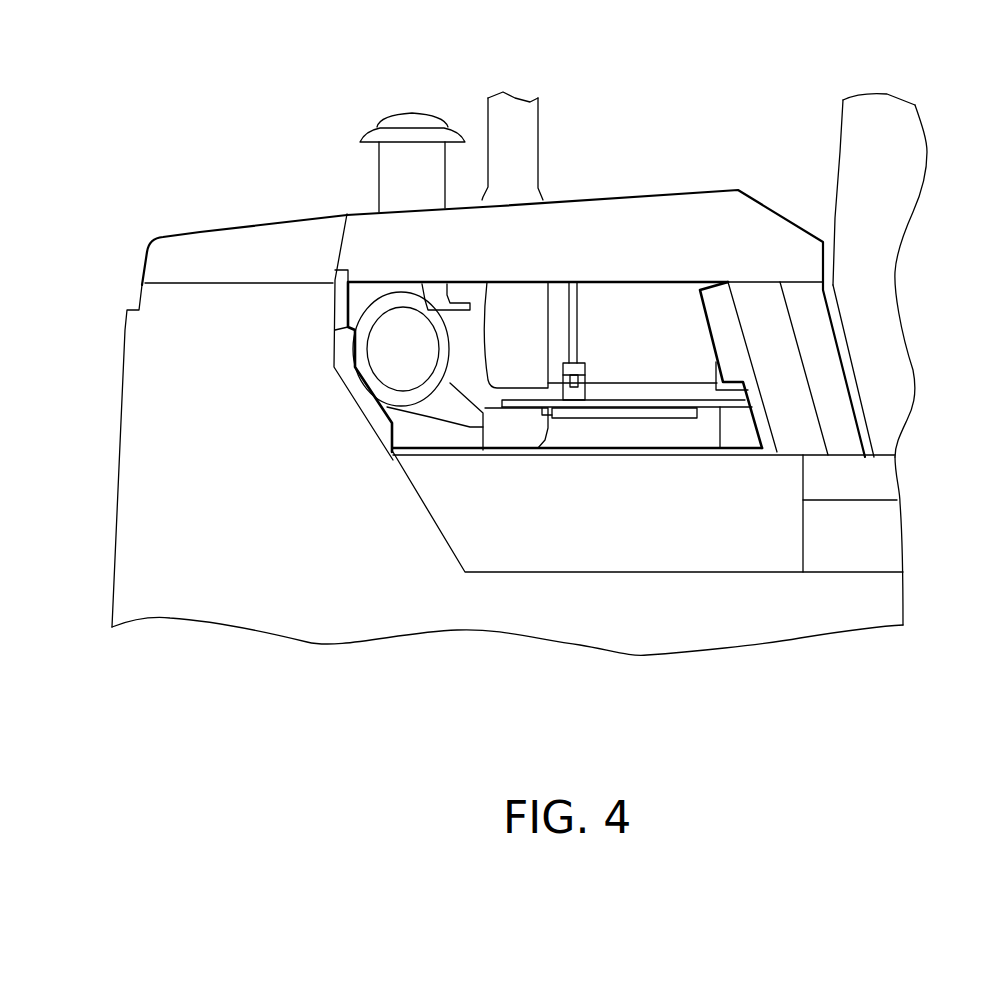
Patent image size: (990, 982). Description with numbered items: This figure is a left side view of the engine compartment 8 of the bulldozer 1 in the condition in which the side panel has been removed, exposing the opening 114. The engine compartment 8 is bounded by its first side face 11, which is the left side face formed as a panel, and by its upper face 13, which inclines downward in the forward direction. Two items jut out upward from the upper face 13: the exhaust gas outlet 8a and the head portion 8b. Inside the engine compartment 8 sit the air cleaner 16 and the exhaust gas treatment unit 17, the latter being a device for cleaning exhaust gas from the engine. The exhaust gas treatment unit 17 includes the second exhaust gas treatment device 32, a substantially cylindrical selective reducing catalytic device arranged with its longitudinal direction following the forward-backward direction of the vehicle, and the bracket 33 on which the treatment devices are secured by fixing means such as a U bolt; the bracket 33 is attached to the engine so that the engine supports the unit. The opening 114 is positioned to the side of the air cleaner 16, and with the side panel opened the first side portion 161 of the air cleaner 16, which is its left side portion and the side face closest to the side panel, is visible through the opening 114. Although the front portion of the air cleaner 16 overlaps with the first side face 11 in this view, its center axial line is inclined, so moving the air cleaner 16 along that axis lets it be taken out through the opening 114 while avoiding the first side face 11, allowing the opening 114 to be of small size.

The bulldozer 1 is at (787, 370).
The engine compartment 8 is at (733, 177).
The exhaust gas outlet 8a is at (527, 127).
The head portion 8b is at (387, 158).
The first side face 11 is at (262, 348).
The upper face 13 is at (655, 192).
The air cleaner 16 is at (380, 337).
The exhaust gas treatment unit 17 is at (672, 310).
The second exhaust gas treatment device 32 is at (698, 343).
The bracket 33 is at (625, 403).
The opening 114 is at (587, 437).
The first side portion 161 is at (392, 373).